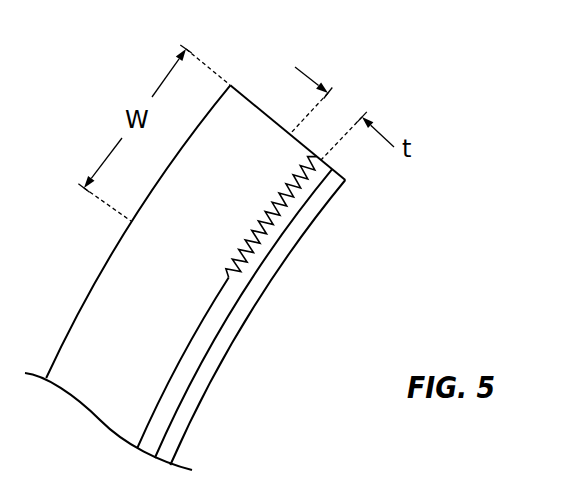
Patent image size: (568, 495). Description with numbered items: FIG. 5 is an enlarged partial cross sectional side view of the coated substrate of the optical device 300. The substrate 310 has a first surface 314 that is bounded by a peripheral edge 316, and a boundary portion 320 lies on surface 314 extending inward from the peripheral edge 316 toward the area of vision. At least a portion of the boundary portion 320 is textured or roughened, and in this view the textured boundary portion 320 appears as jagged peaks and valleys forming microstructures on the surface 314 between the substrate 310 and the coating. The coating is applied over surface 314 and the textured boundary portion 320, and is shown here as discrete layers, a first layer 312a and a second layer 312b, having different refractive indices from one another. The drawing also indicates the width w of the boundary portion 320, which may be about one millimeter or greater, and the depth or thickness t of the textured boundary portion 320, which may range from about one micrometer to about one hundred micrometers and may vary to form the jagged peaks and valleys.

The optical device 300 is at (278, 244).
The substrate 310 is at (113, 268).
The first layer 312a is at (155, 420).
The second layer 312b is at (250, 315).
The first surface 314 is at (176, 373).
The peripheral edge 316 is at (250, 100).
The boundary portion 320 is at (272, 226).